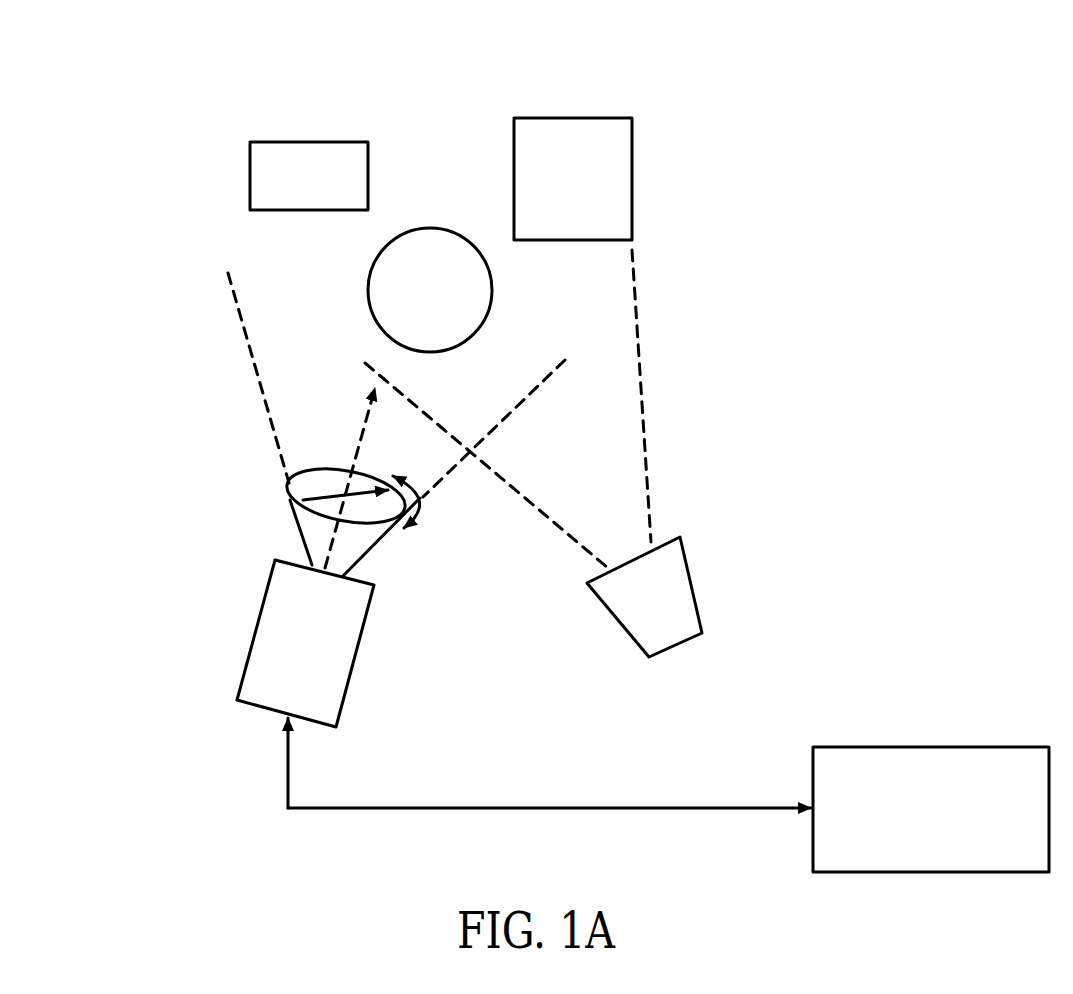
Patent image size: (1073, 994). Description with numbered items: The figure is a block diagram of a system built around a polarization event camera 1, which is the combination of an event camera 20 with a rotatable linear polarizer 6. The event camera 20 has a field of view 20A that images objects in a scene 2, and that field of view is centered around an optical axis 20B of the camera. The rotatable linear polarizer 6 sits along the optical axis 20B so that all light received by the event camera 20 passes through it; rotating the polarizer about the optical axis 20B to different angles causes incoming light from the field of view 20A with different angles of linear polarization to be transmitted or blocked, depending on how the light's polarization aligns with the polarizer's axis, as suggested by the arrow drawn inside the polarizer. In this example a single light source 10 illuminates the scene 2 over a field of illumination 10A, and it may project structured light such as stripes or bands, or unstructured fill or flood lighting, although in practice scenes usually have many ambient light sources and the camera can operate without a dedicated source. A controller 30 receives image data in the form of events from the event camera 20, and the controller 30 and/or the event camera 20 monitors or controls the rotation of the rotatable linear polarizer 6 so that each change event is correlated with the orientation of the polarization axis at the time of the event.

The scene 2 is at (205, 123).
The event camera 20 is at (257, 550).
The polarization event camera 1 is at (392, 582).
The rotatable linear polarizer 6 is at (287, 483).
The field of view 20A is at (257, 383).
The optical axis 20B is at (353, 412).
The light source 10 is at (688, 580).
The field of illumination 10A is at (663, 383).
The controller 30 is at (962, 747).